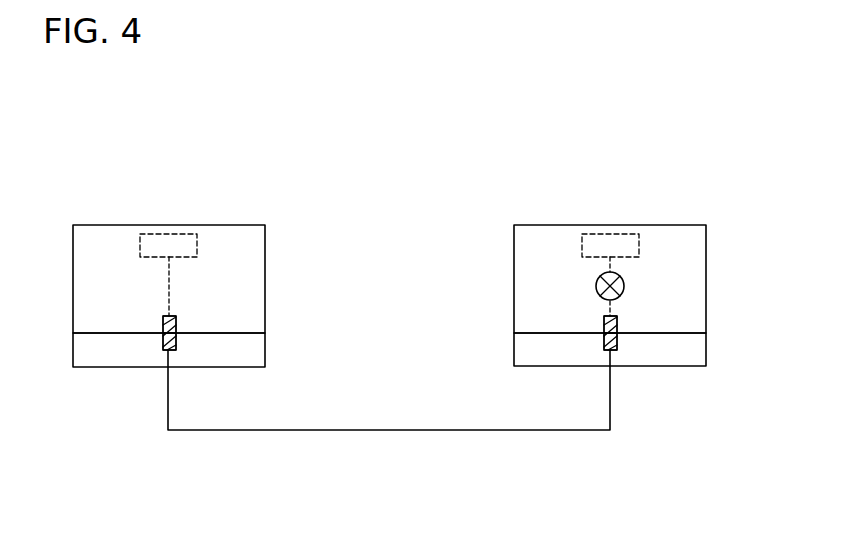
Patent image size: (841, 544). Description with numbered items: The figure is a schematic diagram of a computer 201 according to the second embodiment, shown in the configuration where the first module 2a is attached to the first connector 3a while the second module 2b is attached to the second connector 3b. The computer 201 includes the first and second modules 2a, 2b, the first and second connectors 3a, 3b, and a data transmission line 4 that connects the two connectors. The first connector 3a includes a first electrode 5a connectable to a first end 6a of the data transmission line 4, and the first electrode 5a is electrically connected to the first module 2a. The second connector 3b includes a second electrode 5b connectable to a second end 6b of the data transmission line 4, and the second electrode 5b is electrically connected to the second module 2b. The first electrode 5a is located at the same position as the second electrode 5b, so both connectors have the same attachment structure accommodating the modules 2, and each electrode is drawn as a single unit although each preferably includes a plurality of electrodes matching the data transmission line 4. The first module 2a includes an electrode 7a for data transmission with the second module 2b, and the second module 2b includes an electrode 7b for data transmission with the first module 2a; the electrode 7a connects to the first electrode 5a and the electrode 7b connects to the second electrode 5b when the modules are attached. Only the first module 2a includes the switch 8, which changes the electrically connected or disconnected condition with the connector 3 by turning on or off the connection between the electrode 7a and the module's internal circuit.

The computer 201 is at (415, 158).
The modules 2 is at (389, 247).
The first module 2a is at (542, 240).
The second module 2b is at (102, 240).
The connector 3 is at (401, 382).
The first connector 3a is at (673, 350).
The second connector 3b is at (122, 350).
The data transmission line 4 is at (389, 431).
The first electrode 5a is at (604, 343).
The second electrode 5b is at (176, 341).
The first end 6a is at (612, 351).
The second end 6b is at (172, 351).
The electrode 7a is at (604, 325).
The electrode 7b is at (176, 326).
The switch 8 is at (624, 285).